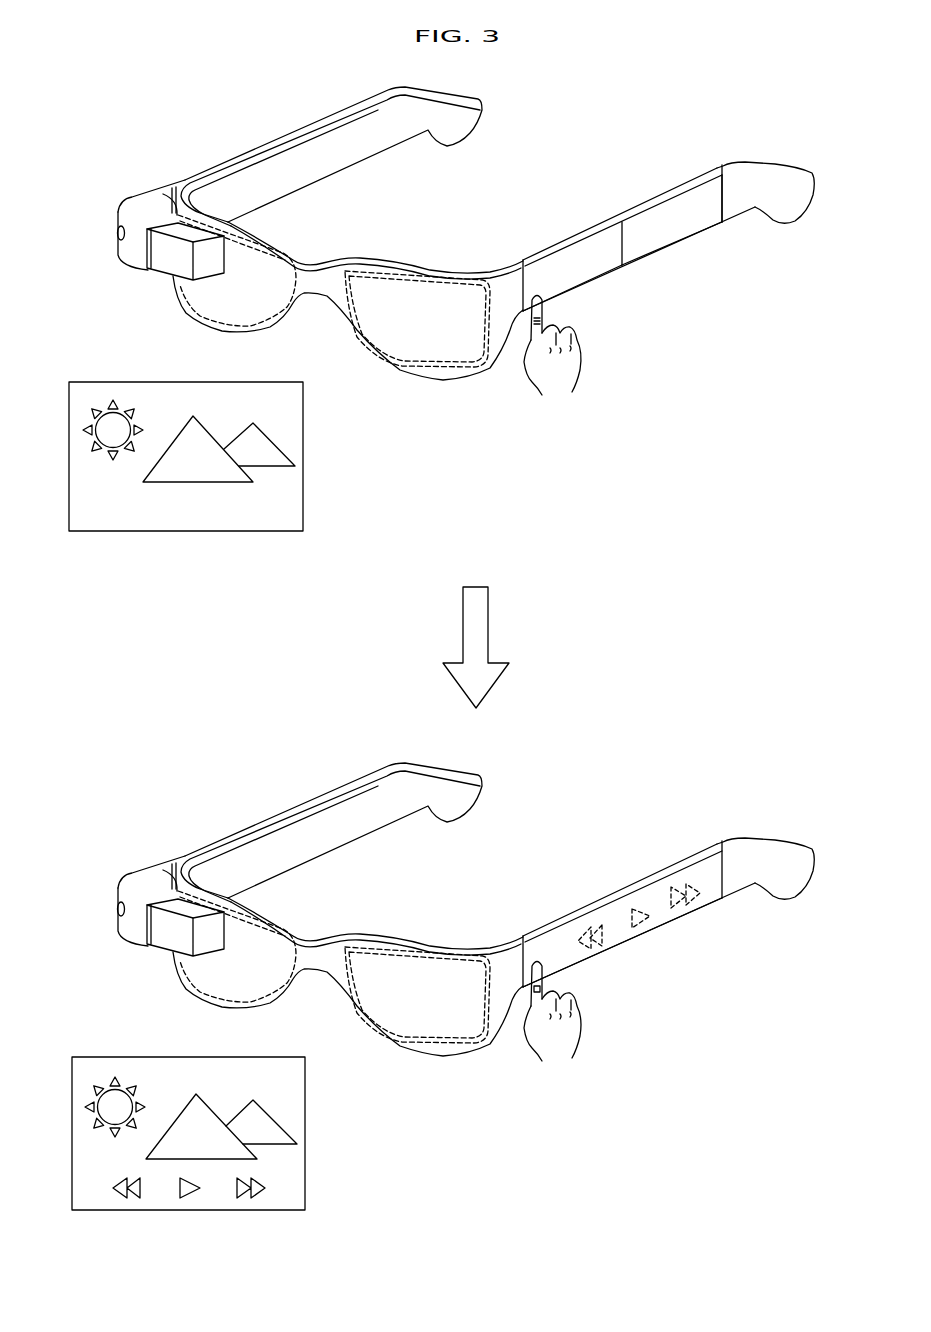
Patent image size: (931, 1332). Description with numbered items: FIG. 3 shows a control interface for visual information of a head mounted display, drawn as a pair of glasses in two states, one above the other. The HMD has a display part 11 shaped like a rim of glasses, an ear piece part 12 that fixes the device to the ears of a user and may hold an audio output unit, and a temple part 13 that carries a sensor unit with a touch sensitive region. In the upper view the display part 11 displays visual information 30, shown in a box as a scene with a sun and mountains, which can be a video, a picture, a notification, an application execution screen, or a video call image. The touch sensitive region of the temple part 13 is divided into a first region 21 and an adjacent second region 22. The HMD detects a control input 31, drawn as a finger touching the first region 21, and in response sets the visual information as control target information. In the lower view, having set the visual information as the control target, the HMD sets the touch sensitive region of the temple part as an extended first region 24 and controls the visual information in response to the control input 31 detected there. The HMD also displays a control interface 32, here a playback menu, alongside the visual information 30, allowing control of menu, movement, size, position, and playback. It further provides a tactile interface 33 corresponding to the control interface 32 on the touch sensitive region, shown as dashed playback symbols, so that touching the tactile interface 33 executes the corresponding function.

The display part 11 is at (172, 262).
The ear piece part 12 is at (777, 217).
The temple part 13 is at (690, 183).
The first region 21 is at (603, 267).
The second region 22 is at (693, 227).
The extended first region 24 is at (613, 940).
The visual information 30 is at (112, 382).
The control input 31 is at (563, 380).
The control interface 32 is at (198, 1192).
The tactile interface 33 is at (643, 907).